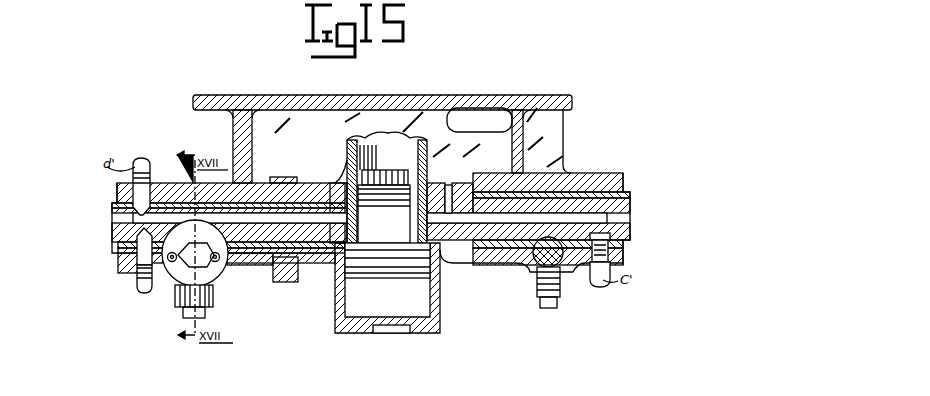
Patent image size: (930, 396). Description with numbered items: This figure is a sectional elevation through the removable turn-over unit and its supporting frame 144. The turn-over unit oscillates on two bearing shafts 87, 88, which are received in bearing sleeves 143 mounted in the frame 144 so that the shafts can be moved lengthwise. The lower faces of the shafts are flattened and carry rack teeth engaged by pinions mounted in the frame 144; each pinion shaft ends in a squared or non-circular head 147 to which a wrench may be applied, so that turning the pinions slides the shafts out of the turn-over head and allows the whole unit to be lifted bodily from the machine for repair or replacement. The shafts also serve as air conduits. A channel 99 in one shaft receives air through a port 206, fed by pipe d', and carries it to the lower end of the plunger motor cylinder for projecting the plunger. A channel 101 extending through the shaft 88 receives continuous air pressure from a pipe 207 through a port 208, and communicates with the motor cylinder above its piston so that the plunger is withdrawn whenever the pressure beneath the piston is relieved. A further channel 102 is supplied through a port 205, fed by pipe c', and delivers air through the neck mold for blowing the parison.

The frame 144 is at (466, 93).
The channel 99 is at (253, 205).
The bearing shaft 87 is at (588, 193).
The bearing shaft 88 is at (333, 243).
The channel 102 is at (473, 221).
The bearing sleeve 143 is at (250, 250).
The channel 101 is at (306, 262).
The non-circular head 147 is at (183, 266).
The port 206 is at (138, 197).
The port 208 is at (133, 258).
The pipe 207 is at (136, 280).
The port 205 is at (610, 260).